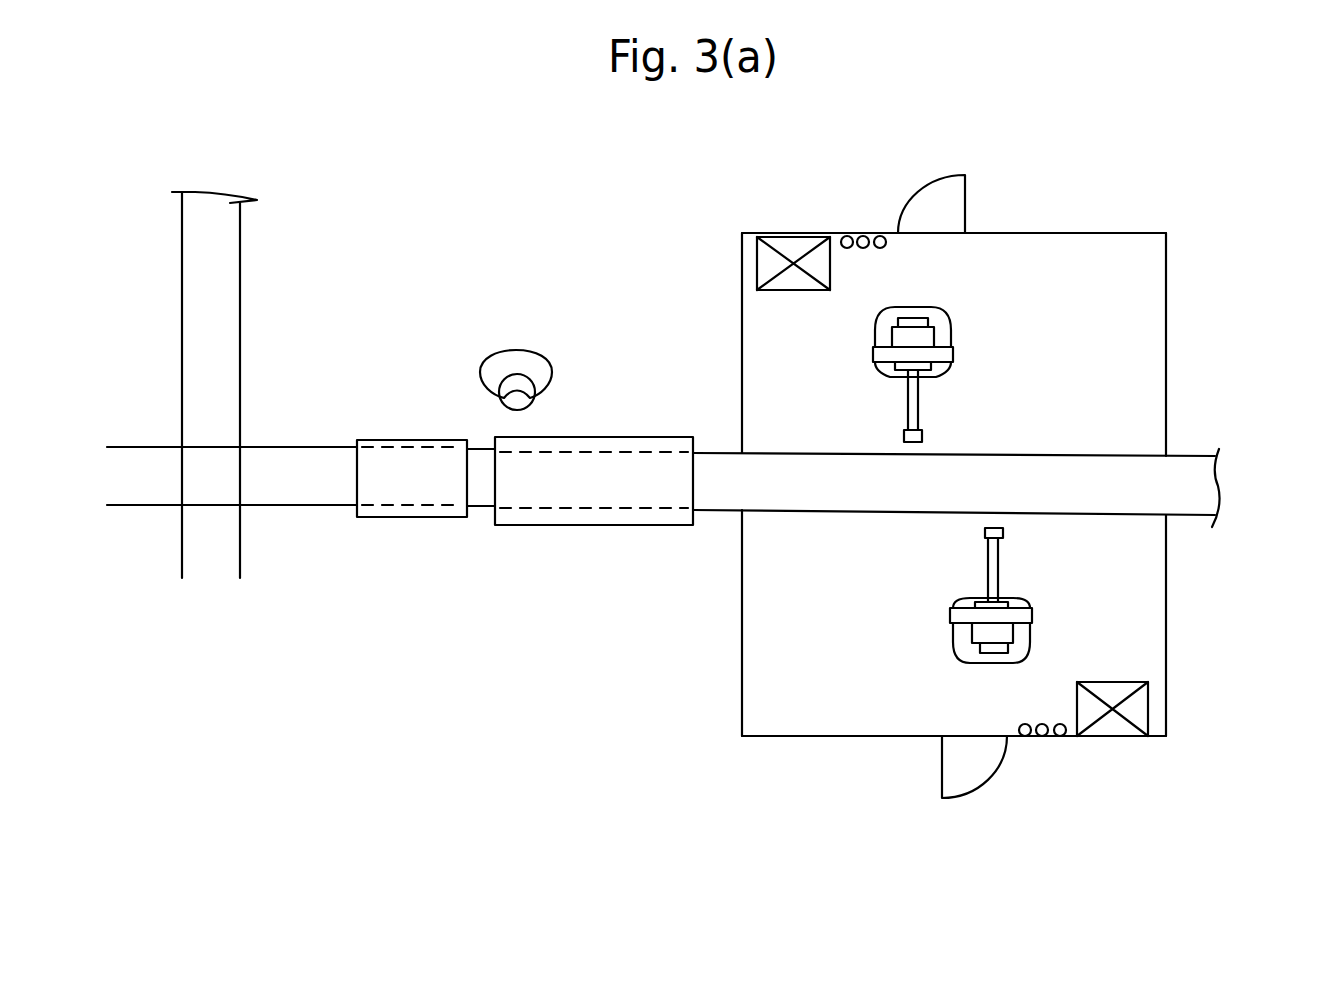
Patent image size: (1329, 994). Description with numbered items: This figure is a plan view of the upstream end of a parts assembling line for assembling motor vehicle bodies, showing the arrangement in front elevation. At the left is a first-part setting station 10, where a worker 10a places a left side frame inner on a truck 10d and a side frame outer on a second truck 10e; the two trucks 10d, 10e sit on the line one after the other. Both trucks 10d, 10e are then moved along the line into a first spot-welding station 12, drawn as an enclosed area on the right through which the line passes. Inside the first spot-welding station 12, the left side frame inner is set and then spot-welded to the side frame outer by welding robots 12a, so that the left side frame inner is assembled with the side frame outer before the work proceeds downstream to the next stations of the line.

The first-part setting station 10 is at (478, 550).
The worker 10a is at (542, 357).
The truck 10d is at (415, 438).
The truck 10e is at (613, 437).
The first spot-welding station 12 is at (863, 750).
The welding robots 12a is at (1032, 627).